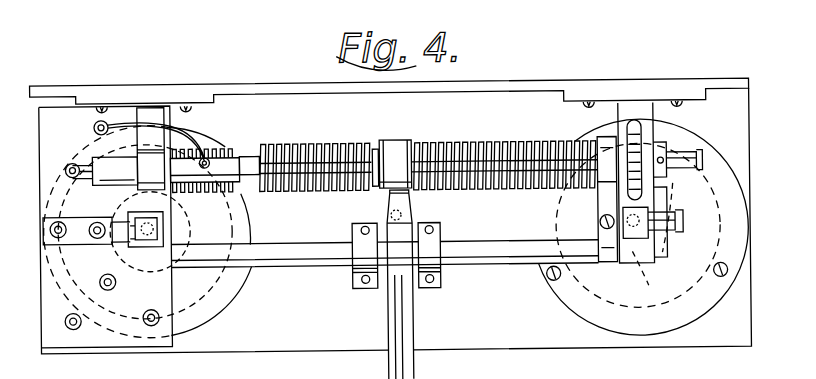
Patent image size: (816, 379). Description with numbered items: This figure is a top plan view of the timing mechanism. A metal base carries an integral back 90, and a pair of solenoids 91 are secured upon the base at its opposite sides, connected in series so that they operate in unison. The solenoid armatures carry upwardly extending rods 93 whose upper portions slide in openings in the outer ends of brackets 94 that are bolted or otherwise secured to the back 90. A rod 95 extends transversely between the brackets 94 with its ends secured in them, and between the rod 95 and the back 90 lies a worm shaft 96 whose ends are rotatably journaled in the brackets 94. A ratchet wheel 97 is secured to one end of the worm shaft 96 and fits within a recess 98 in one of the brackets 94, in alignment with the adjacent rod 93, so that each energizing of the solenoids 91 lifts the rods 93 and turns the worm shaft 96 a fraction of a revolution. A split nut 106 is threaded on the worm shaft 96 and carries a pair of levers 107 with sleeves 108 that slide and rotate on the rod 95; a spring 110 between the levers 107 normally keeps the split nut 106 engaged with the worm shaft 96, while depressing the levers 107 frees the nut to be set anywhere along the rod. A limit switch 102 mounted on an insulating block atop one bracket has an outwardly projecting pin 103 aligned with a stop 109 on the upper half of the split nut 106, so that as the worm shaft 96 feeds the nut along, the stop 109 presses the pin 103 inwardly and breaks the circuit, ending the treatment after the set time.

The back 90 is at (627, 91).
The solenoids 91 is at (193, 288).
The rods 93 is at (640, 269).
The brackets 94 is at (642, 105).
The rod 95 is at (293, 254).
The worm shaft 96 is at (463, 144).
The ratchet wheel 97 is at (632, 150).
The recess 98 is at (662, 203).
The limit switch 102 is at (218, 156).
The pin 103 is at (257, 152).
The split nut 106 is at (402, 143).
The levers 107 is at (393, 318).
The sleeves 108 is at (432, 242).
The stop 109 is at (378, 146).
The spring 110 is at (407, 213).